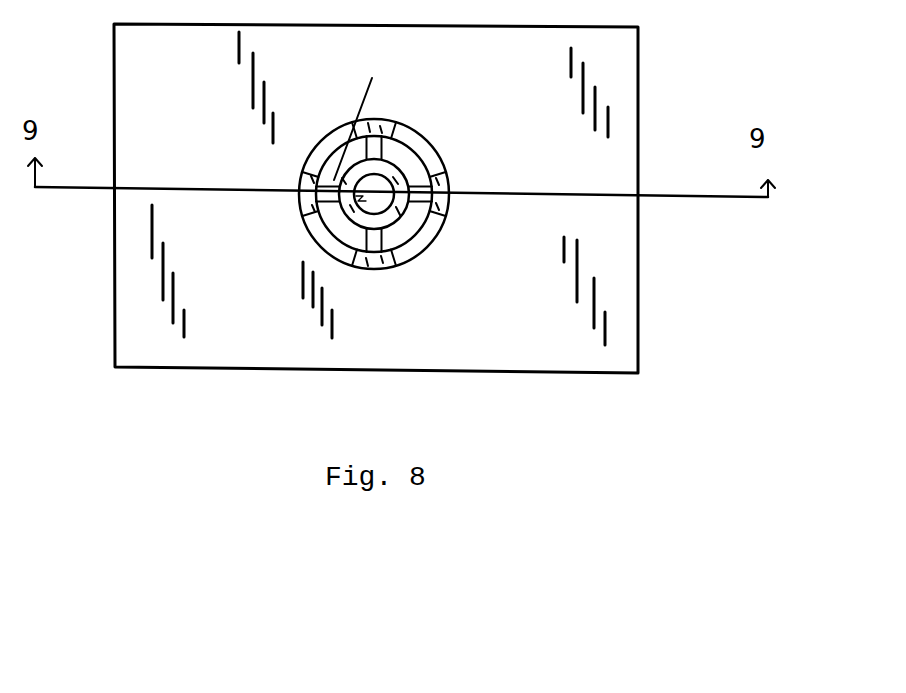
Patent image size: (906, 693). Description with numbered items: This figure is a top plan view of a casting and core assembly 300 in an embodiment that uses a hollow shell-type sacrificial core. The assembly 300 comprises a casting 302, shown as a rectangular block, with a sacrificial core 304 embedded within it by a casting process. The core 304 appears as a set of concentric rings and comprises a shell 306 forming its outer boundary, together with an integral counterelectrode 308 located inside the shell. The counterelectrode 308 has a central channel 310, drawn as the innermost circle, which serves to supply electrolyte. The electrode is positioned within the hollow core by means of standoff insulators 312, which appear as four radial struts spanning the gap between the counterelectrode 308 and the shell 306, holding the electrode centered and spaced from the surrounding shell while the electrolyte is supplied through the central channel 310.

The casting and core assembly 300 is at (706, 227).
The casting 302 is at (638, 87).
The sacrificial core 304 is at (422, 133).
The shell 306 is at (318, 167).
The integral counterelectrode 308 is at (412, 250).
The central channel 310 is at (345, 207).
The standoff insulators 312 is at (400, 130).